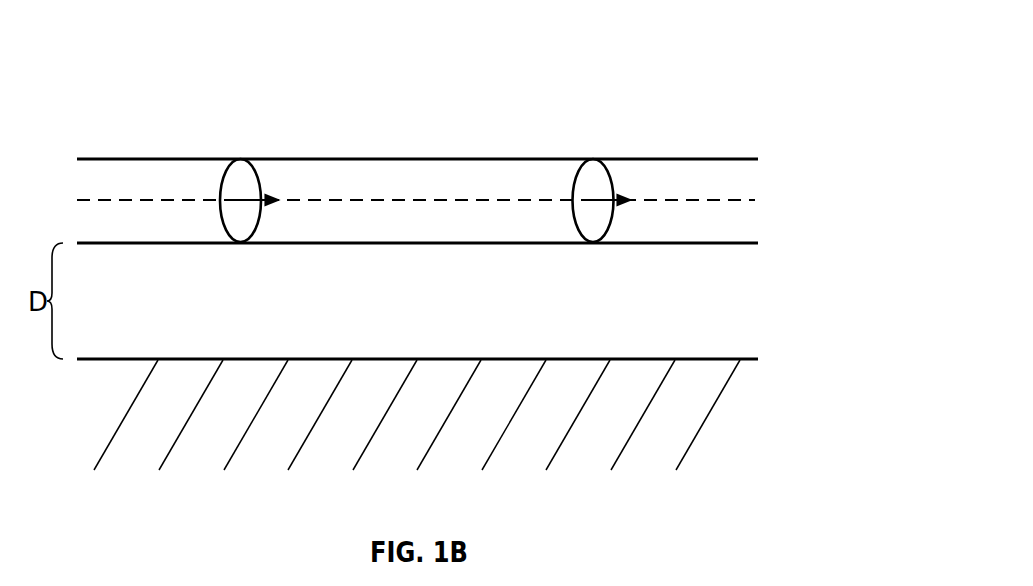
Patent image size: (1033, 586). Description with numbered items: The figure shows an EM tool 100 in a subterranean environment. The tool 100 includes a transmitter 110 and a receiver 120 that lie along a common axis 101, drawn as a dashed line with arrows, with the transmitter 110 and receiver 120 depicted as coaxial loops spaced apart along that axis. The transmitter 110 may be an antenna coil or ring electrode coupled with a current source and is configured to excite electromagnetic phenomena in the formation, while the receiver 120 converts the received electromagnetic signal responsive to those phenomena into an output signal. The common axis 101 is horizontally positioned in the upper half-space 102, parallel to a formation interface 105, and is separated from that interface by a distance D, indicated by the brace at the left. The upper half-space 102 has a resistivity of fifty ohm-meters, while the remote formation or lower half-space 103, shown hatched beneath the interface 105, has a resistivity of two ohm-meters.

The EM tool 100 is at (785, 44).
The common axis 101 is at (77, 200).
The upper half-space 102 is at (440, 82).
The remote formation (lower half-space) 103 is at (438, 428).
The formation interface 105 is at (672, 354).
The transmitter 110 is at (253, 158).
The receiver 120 is at (606, 158).